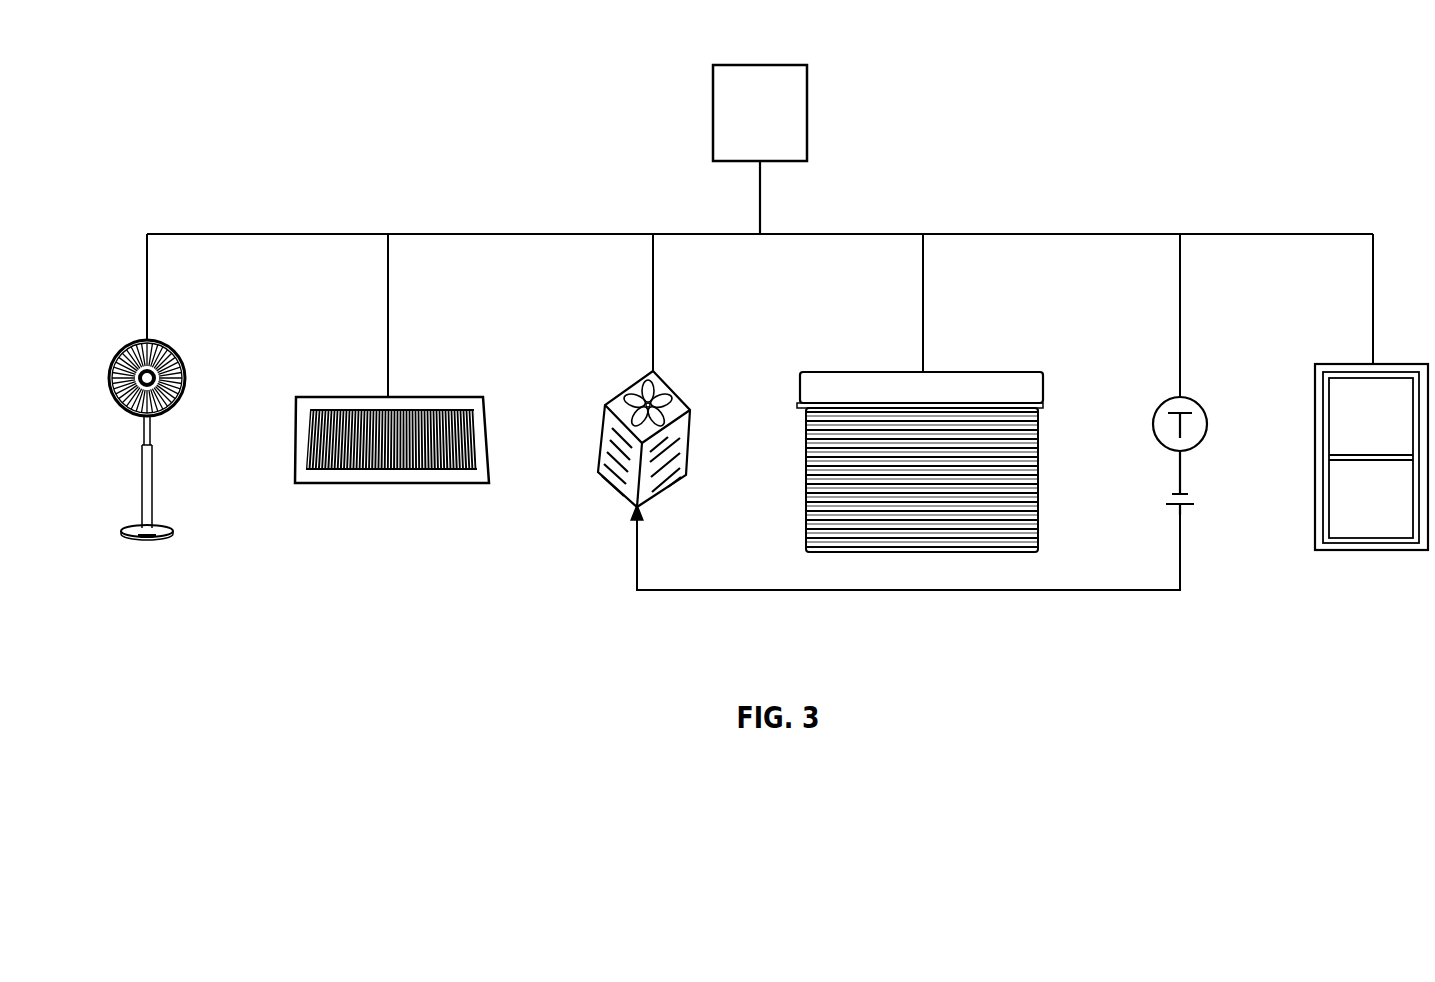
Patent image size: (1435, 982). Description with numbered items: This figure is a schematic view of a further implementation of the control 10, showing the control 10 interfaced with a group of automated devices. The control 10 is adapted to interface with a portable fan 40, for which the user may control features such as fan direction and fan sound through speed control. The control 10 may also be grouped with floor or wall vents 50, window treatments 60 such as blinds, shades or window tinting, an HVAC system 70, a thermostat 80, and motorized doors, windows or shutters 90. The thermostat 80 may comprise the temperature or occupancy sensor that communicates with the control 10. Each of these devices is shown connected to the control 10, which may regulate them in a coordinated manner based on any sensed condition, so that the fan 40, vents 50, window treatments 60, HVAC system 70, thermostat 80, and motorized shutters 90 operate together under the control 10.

The control 10 is at (745, 128).
The portable fan 40 is at (145, 540).
The floor/wall vents 50 is at (388, 486).
The window treatments 60 is at (963, 372).
The HVAC system 70 is at (667, 393).
The thermostat 80 is at (1153, 428).
The motorized doors/windows/shutters 90 is at (1370, 551).